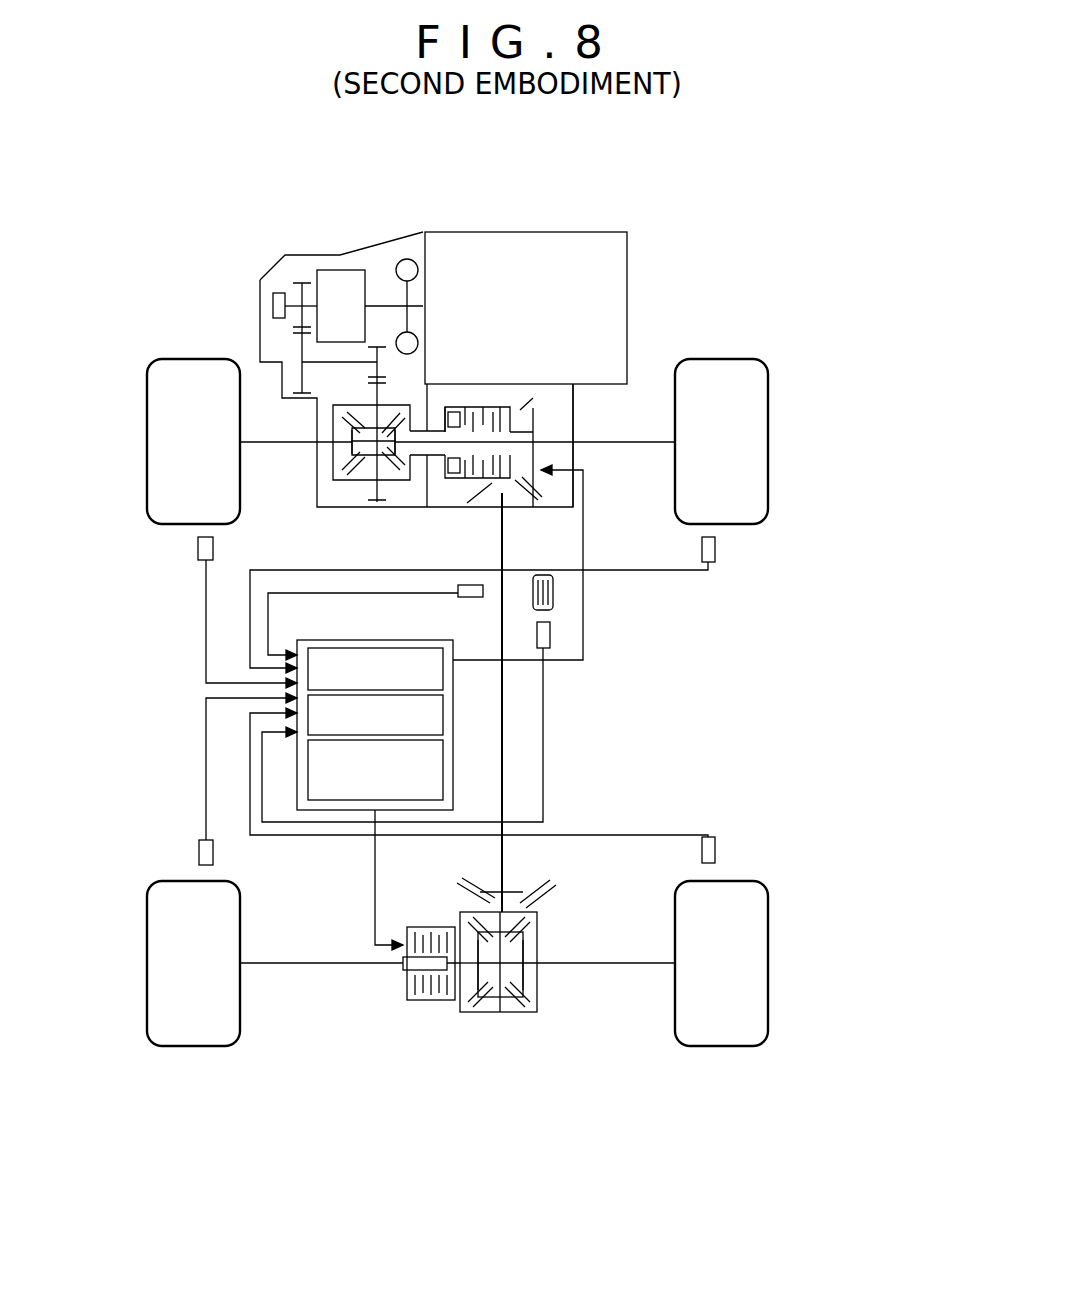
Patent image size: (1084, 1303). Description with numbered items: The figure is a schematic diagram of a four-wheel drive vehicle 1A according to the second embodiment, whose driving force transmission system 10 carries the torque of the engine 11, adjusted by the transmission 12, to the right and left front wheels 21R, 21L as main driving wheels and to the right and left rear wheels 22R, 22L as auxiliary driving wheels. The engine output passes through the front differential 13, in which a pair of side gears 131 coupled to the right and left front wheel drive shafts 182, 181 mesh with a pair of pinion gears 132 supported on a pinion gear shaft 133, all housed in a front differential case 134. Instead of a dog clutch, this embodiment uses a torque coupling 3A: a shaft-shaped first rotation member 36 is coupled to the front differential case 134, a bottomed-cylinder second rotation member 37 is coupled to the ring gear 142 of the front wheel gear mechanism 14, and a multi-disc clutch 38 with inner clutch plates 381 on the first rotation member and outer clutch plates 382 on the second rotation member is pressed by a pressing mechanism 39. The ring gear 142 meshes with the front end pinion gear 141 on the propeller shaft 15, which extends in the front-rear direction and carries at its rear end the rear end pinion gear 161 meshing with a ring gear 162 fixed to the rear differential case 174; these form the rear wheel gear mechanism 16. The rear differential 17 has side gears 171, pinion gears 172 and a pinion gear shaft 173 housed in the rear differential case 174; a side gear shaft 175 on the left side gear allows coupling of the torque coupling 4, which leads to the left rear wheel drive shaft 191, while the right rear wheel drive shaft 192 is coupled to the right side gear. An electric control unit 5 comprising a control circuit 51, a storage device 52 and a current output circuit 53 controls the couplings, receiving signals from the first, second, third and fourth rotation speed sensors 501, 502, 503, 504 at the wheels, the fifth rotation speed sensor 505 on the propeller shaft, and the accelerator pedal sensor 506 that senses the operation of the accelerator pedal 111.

The four-wheel drive vehicle 1A is at (686, 182).
The driving force transmission system 10 is at (492, 1033).
The engine 11 is at (488, 232).
The transmission 12 is at (313, 267).
The front differential 13 is at (306, 411).
The side gears 131 is at (353, 448).
The pinion gears 132 is at (345, 398).
The pinion gear shaft 133 is at (375, 440).
The front differential case 134 is at (372, 405).
The front wheel gear mechanism 14 is at (614, 448).
The front end pinion gear 141 is at (518, 497).
The ring gear 142 is at (533, 410).
The propeller shaft 15 is at (503, 763).
The rear wheel gear mechanism 16 is at (621, 835).
The rear end pinion gear 161 is at (540, 885).
The ring gear 162 is at (478, 881).
The rear differential 17 is at (633, 988).
The side gears 171 is at (537, 942).
The pinion gears 172 is at (538, 918).
The pinion gear shaft 173 is at (500, 963).
The rear differential case 174 is at (523, 1005).
The side gear shaft 175 is at (462, 970).
The left front wheel drive shaft 181 is at (303, 440).
The right front wheel drive shaft 182 is at (602, 442).
The left rear wheel drive shaft 191 is at (330, 965).
The right rear wheel drive shaft 192 is at (582, 965).
The left front wheel 21L is at (147, 438).
The right front wheel 21R is at (768, 430).
The left rear wheel 22L is at (148, 968).
The right rear wheel 22R is at (770, 970).
The torque coupling 3A is at (522, 392).
The first rotation member 36 is at (435, 400).
The second rotation member 37 is at (506, 400).
The multi-disc clutch 38 is at (500, 340).
The inner clutch plates 381 is at (469, 405).
The outer clutch plates 382 is at (496, 405).
The pressing mechanism 39 is at (455, 470).
The torque coupling 4 is at (395, 1020).
The electric control unit 5 is at (398, 703).
The control circuit 51 is at (456, 660).
The storage device 52 is at (443, 717).
The current output circuit 53 is at (443, 752).
The first rotation speed sensor 501 is at (197, 560).
The second rotation speed sensor 502 is at (717, 548).
The third rotation speed sensor 503 is at (198, 846).
The fourth rotation speed sensor 504 is at (718, 850).
The fifth rotation speed sensor 505 is at (467, 597).
The accelerator pedal sensor 506 is at (552, 633).
The accelerator pedal 111 is at (543, 575).